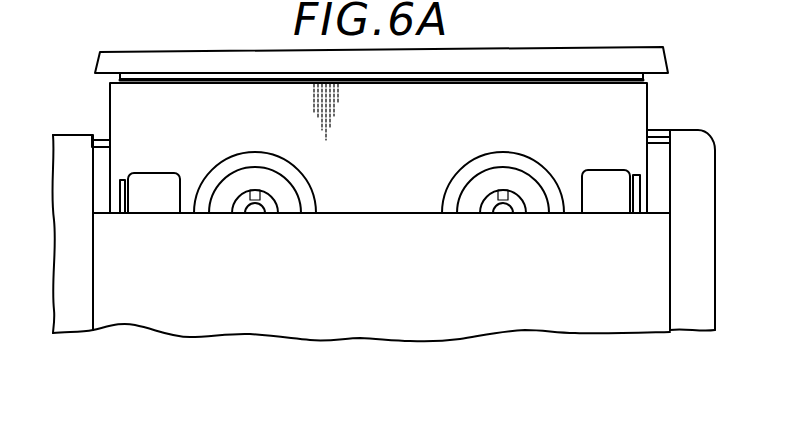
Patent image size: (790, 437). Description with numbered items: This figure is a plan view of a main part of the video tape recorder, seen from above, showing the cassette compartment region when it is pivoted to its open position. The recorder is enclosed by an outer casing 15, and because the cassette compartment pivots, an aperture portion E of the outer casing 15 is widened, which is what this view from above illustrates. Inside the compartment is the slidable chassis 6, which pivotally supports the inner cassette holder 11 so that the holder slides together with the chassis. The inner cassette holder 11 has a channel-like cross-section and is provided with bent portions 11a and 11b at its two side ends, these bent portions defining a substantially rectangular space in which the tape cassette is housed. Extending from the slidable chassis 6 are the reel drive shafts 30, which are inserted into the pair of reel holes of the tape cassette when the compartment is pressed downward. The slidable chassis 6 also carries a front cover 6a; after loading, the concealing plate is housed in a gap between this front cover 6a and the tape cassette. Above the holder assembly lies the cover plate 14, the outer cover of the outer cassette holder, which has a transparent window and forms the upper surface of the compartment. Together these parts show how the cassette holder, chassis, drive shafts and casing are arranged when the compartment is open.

The front cover 6a is at (655, 61).
The slidable chassis 6 is at (640, 110).
The inner cassette holder 11 is at (120, 190).
The bent portion 11a is at (153, 183).
The bent portion 11b is at (600, 182).
The cover plate 14 is at (610, 315).
The outer casing 15 is at (78, 278).
The reel drive shafts 30 is at (258, 213).
The aperture portion E is at (378, 155).